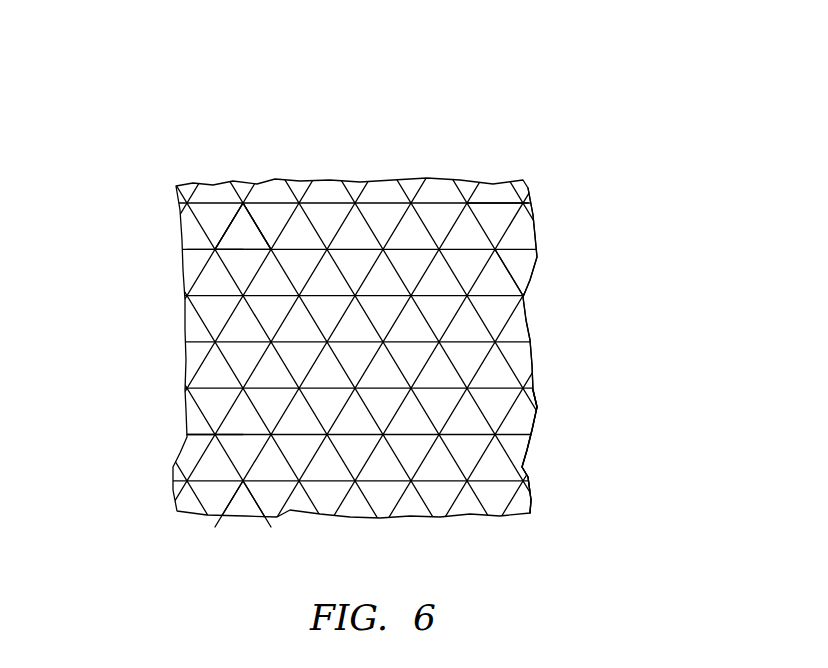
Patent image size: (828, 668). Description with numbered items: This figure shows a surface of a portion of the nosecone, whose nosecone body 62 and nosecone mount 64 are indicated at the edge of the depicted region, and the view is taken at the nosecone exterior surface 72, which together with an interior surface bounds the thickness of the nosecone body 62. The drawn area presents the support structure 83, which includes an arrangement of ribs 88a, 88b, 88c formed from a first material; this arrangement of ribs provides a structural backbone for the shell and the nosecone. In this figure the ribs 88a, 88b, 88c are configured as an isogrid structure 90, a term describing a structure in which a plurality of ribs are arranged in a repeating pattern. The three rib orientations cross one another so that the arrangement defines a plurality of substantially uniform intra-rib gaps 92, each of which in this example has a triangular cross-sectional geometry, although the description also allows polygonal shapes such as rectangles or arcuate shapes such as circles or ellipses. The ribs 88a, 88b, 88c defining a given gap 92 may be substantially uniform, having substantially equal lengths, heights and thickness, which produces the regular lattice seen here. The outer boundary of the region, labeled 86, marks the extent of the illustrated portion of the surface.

The support structure 83 is at (123, 110).
The edge of mesh 86 is at (538, 337).
The nosecone body 62 is at (530, 465).
The nosecone mount 64 is at (529, 451).
The nosecone exterior surface 72 is at (507, 215).
The isogrid structure 90 is at (513, 272).
The intra-rib gaps 92 is at (242, 238).
The rib 88a is at (228, 240).
The rib 88b is at (258, 225).
The rib 88c is at (238, 253).